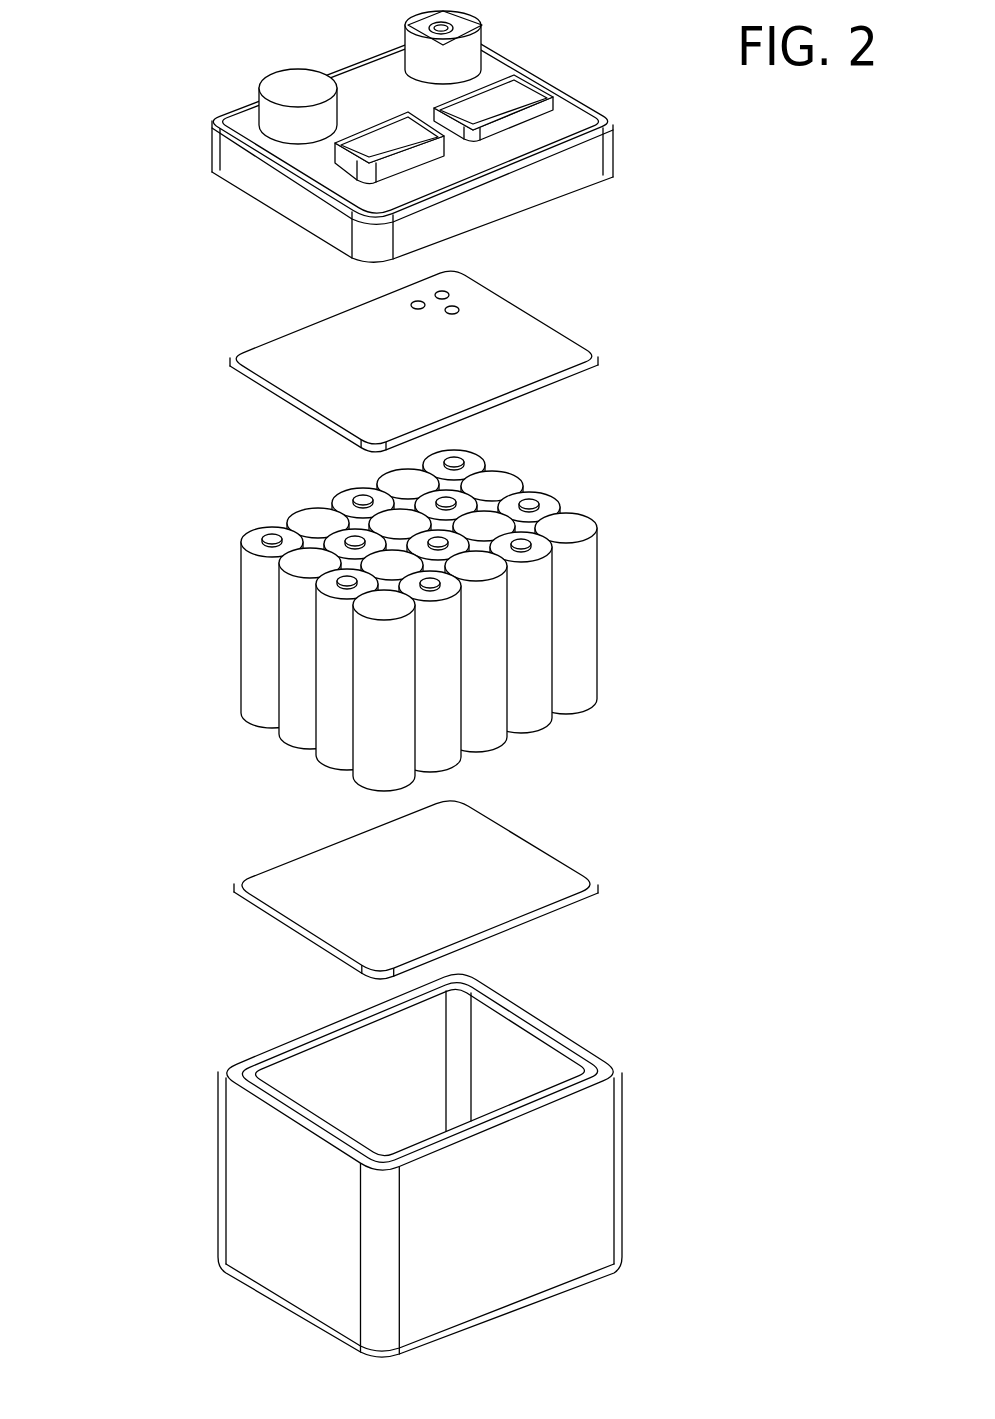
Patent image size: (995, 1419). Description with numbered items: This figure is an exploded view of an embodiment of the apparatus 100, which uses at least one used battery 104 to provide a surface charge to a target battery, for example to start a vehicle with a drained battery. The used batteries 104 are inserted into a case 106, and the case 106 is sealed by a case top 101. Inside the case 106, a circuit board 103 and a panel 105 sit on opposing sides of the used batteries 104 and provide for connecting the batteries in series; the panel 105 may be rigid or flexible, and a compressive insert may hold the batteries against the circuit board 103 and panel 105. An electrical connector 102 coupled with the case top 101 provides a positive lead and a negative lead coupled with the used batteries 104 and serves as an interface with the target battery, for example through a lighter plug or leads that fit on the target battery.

The battery pack 100 is at (663, 92).
The case top 101 is at (173, 155).
The electrical connector 102 is at (395, 22).
The circuit board 103 is at (188, 377).
The used battery 104 is at (187, 597).
The panel 105 is at (194, 896).
The case 106 is at (190, 1137).